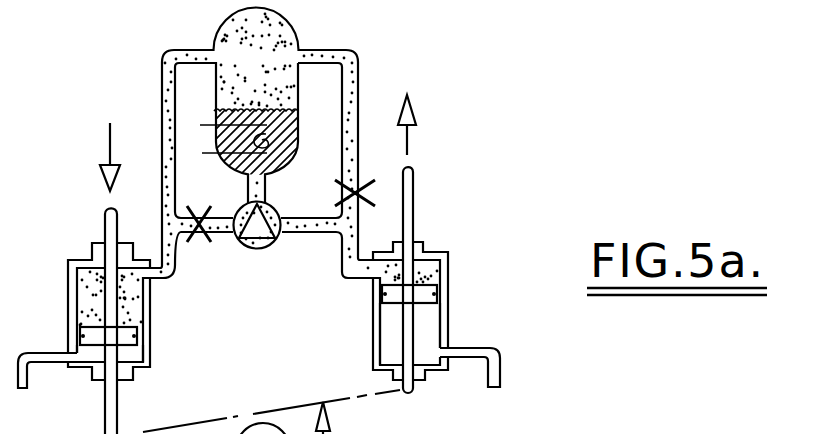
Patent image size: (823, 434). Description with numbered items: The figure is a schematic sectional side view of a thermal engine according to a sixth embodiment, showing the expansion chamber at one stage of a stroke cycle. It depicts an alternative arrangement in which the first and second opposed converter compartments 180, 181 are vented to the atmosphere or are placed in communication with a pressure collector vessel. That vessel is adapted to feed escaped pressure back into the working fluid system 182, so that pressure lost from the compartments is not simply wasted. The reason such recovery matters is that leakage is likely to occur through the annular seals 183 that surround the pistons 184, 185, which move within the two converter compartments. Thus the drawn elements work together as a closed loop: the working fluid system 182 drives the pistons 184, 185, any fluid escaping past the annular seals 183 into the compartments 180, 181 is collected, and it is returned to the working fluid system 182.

The first converter compartment 180 is at (92, 358).
The second converter compartment 181 is at (393, 340).
The working fluid system 182 is at (432, 268).
The annular seals 183 is at (139, 334).
The piston 184 is at (140, 353).
The piston 185 is at (415, 297).